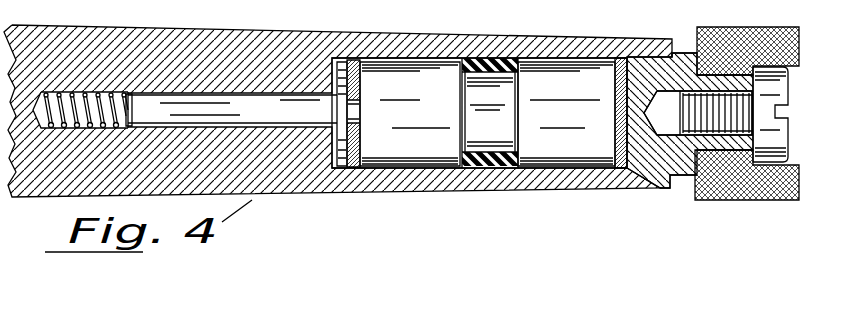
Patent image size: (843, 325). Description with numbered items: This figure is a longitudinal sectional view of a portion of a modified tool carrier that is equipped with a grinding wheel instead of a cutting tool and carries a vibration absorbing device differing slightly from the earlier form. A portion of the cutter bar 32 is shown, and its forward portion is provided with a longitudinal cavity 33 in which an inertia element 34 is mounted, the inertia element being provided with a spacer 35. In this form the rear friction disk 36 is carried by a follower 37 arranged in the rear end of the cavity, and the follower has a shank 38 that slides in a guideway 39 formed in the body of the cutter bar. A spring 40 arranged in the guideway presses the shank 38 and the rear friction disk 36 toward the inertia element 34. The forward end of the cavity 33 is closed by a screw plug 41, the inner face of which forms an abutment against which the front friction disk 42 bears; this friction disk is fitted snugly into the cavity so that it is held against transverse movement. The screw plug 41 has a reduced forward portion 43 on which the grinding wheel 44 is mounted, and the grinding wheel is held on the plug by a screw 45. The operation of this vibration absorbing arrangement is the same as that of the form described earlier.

The cutter bar 32 is at (243, 65).
The longitudinal cavity 33 is at (567, 170).
The inertia element 34 is at (559, 105).
The spacer 35 is at (489, 58).
The rear friction disk 36 is at (354, 62).
The follower 37 is at (339, 150).
The shank 38 is at (284, 108).
The guideway 39 is at (122, 97).
The spring 40 is at (90, 95).
The screw plug 41 is at (679, 162).
The front friction disk 42 is at (620, 60).
The reduced forward portion 43 is at (719, 140).
The grinding wheel 44 is at (743, 190).
The screw 45 is at (776, 106).